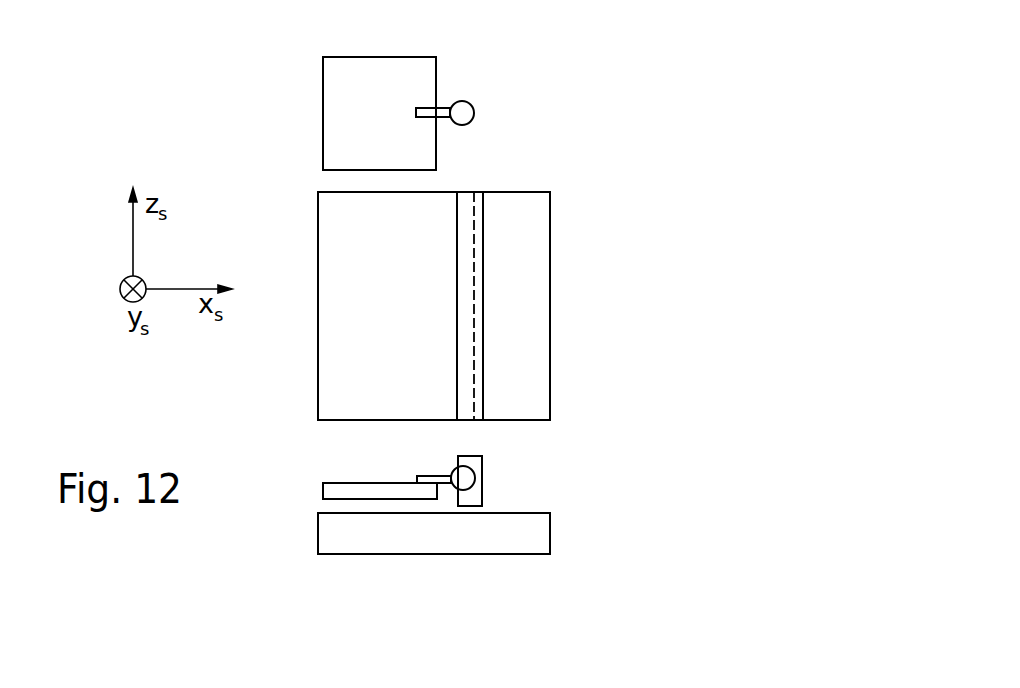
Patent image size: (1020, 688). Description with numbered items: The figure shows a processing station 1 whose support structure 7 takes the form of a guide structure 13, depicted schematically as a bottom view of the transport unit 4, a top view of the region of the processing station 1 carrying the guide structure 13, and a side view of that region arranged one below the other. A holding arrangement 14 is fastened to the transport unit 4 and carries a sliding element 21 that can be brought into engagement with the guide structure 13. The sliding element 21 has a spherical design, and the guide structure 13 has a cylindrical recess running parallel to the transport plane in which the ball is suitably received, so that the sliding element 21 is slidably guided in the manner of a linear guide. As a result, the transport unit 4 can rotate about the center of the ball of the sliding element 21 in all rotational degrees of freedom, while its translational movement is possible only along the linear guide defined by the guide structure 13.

The processing station 1 is at (550, 345).
The transport unit 4 is at (347, 86).
The support structure 7 is at (504, 242).
The guide structure 13 is at (483, 268).
The holding arrangement 14 is at (444, 108).
The sliding element 21 is at (473, 107).